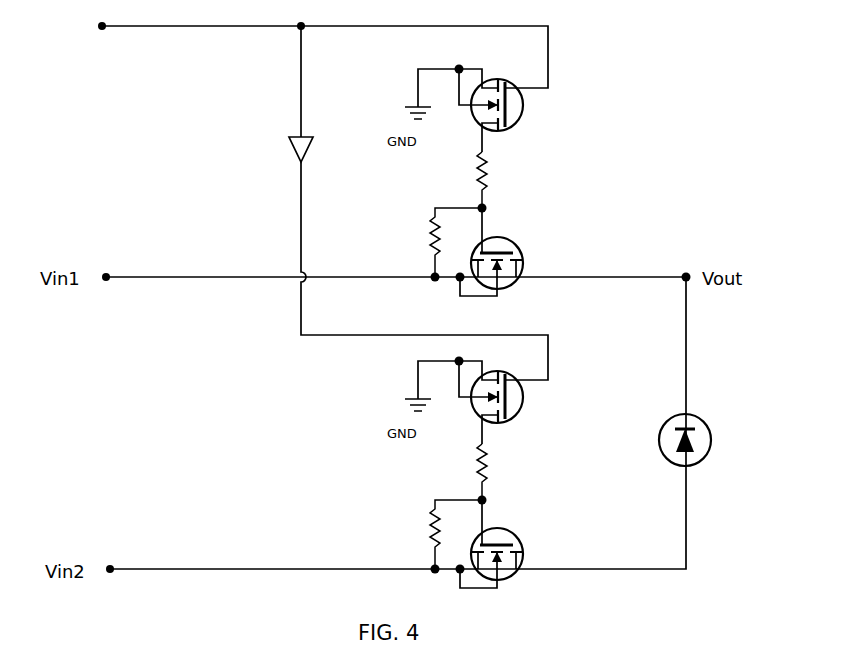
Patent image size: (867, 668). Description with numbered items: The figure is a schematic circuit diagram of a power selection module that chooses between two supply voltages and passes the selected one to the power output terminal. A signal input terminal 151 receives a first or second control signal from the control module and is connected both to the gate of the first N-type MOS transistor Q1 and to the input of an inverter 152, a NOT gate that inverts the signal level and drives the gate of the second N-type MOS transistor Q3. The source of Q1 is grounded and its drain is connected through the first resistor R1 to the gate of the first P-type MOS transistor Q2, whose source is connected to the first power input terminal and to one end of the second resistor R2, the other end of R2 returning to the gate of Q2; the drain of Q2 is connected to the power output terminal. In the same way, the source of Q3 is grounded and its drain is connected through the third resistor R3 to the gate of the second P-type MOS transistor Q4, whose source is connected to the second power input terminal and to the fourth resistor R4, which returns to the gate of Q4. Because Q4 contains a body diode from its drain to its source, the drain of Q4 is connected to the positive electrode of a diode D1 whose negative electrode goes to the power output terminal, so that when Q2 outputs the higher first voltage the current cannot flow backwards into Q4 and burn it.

The signal input terminal 151 is at (296, 52).
The inverter 152 is at (390, 203).
The first N-type MOS transistor Q1 is at (502, 102).
The first P-type MOS transistor Q2 is at (499, 252).
The second N-type MOS transistor Q3 is at (502, 394).
The second P-type MOS transistor Q4 is at (499, 544).
The first resistor R1 is at (488, 173).
The second resistor R2 is at (439, 241).
The third resistor R3 is at (488, 465).
The fourth resistor R4 is at (439, 533).
The diode D1 is at (702, 440).